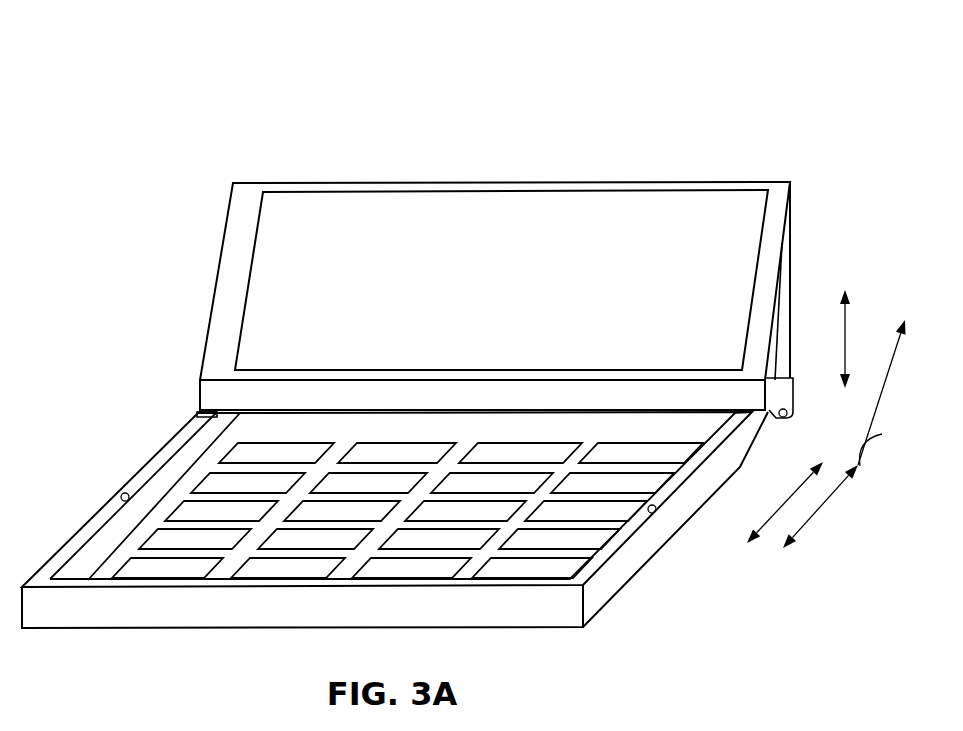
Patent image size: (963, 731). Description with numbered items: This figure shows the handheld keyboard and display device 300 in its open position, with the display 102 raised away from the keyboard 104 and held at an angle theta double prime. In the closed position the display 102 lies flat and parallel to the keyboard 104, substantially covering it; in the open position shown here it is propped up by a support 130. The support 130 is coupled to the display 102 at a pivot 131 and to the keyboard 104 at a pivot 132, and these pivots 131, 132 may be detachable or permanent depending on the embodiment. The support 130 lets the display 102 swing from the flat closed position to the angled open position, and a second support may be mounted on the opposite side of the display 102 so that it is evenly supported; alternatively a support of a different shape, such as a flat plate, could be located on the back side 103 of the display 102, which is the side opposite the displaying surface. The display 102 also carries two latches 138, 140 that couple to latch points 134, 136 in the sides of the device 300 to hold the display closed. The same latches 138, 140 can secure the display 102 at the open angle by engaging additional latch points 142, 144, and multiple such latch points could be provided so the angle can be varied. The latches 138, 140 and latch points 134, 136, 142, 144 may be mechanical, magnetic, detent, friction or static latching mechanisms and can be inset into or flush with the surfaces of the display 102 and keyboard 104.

The handheld keyboard and display device 300 is at (312, 54).
The display 102 is at (715, 243).
The back side 103 is at (498, 187).
The keyboard 104 is at (463, 553).
The support 130 is at (785, 325).
The pivot 131 is at (784, 247).
The pivot 132 is at (784, 418).
The latch point 134 is at (652, 514).
The latch point 136 is at (121, 497).
The latch 138 is at (781, 420).
The latch 140 is at (200, 412).
The additional latch point 142 is at (737, 414).
The additional latch point 144 is at (197, 415).